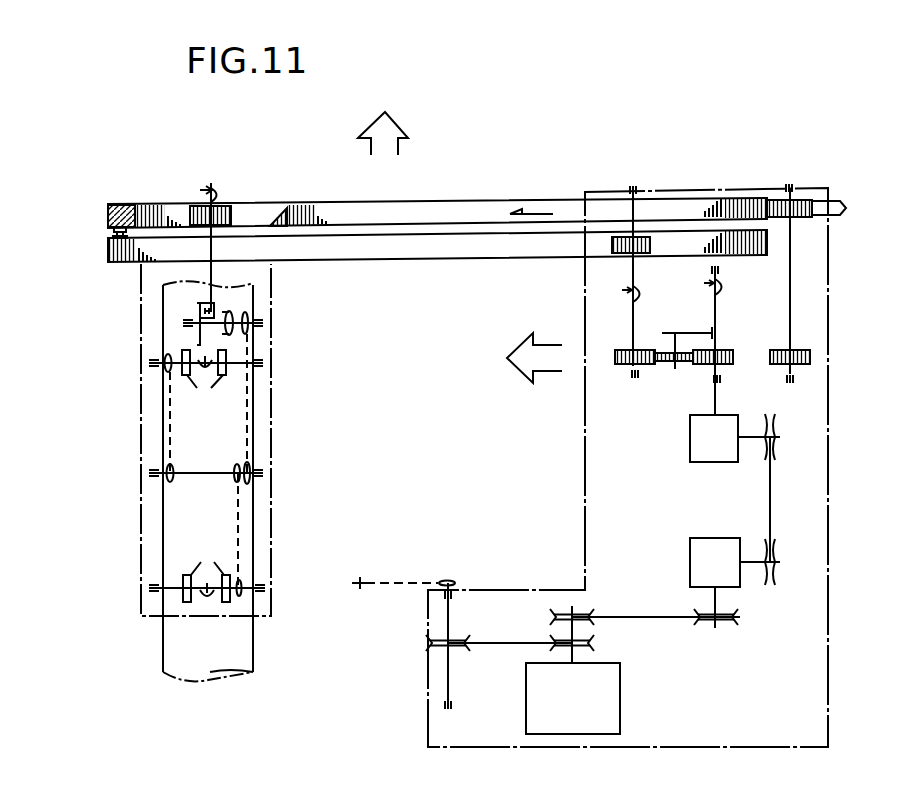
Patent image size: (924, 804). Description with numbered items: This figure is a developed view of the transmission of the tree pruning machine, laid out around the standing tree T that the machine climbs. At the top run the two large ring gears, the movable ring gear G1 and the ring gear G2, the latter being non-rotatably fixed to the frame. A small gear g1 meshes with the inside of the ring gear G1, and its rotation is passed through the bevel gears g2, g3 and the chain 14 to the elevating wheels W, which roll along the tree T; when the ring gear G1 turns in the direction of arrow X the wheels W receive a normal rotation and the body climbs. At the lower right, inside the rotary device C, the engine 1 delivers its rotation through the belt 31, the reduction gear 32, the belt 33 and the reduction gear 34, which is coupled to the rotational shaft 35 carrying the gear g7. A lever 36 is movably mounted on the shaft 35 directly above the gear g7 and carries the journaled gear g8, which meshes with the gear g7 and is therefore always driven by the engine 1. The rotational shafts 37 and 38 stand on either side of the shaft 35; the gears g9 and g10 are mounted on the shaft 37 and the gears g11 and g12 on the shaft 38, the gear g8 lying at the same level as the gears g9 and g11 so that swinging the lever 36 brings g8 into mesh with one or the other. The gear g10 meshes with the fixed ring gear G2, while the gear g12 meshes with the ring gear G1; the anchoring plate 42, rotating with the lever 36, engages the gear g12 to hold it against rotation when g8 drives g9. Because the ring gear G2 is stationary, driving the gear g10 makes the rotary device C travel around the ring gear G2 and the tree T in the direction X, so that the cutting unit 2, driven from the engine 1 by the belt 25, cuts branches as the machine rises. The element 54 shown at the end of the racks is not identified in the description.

The engine 1 is at (534, 670).
The cutting unit 2 is at (354, 589).
The chain 14 is at (168, 418).
The belt 25 is at (402, 583).
The belt 31 is at (657, 620).
The reduction gear 32 is at (715, 562).
The belt 33 is at (771, 492).
The reduction gear 34 is at (714, 438).
The rotational shaft 35 is at (717, 319).
The lever 36 is at (690, 331).
The rotational shaft 37 is at (632, 322).
The rotational shaft 38 is at (793, 318).
The anchoring plate 42 is at (831, 202).
The housing 54 is at (124, 206).
The small gear g1 is at (229, 212).
The bevel gear g2 is at (216, 312).
The bevel gear g3 is at (199, 318).
The gear g7 is at (702, 364).
The gear g8 is at (663, 362).
The gear g9 is at (620, 364).
The gear g10 is at (613, 248).
The gear g11 is at (802, 364).
The gear g12 is at (806, 200).
The ring gear G1 is at (470, 200).
The ring gear G2 is at (410, 262).
The rotary device C is at (829, 570).
The standing tree T is at (255, 632).
The elevating wheels W is at (207, 476).
The direction arrow X is at (555, 184).